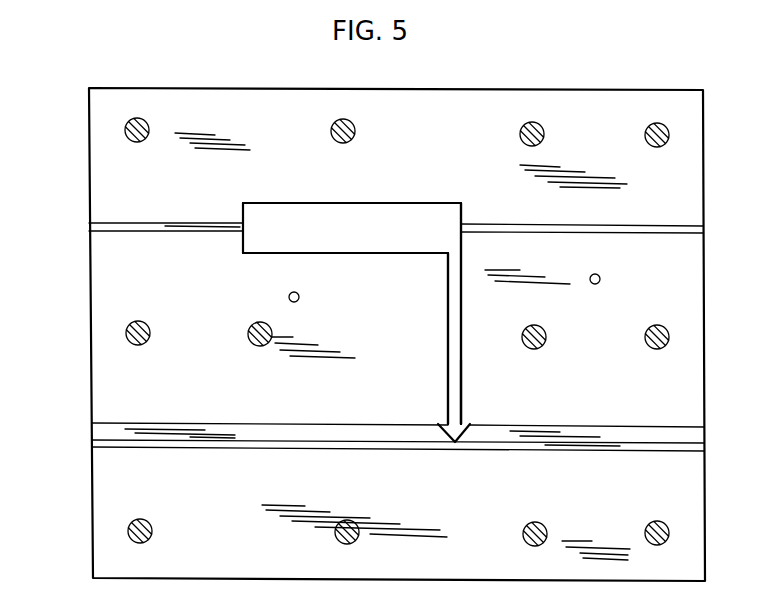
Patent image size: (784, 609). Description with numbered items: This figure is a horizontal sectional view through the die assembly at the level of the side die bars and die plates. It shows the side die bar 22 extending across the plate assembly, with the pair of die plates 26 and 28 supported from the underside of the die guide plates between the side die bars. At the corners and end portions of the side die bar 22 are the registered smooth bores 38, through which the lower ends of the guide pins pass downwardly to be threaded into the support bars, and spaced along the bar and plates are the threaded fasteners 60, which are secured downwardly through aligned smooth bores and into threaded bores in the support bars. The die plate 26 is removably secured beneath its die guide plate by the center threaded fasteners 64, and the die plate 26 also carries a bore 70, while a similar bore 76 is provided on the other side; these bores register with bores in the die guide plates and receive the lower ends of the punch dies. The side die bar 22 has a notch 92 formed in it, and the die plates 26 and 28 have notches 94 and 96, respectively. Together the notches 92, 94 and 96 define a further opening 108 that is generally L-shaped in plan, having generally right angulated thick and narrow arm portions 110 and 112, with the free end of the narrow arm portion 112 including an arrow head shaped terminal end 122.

The side die bar 22 is at (476, 95).
The die plate 26 is at (688, 310).
The die plate 28 is at (105, 373).
The smooth bores 38 is at (138, 120).
The threaded fasteners 60 is at (333, 125).
The center threaded fasteners 64 is at (150, 338).
The bore 70 is at (601, 279).
The bore 76 is at (289, 296).
The notch 92 is at (383, 207).
The notch 94 is at (461, 320).
The notch 96 is at (417, 253).
The opening 108 is at (448, 303).
The thick arm portion 110 is at (317, 202).
The narrow arm portion 112 is at (461, 383).
The arrow head shaped terminal end 122 is at (453, 444).